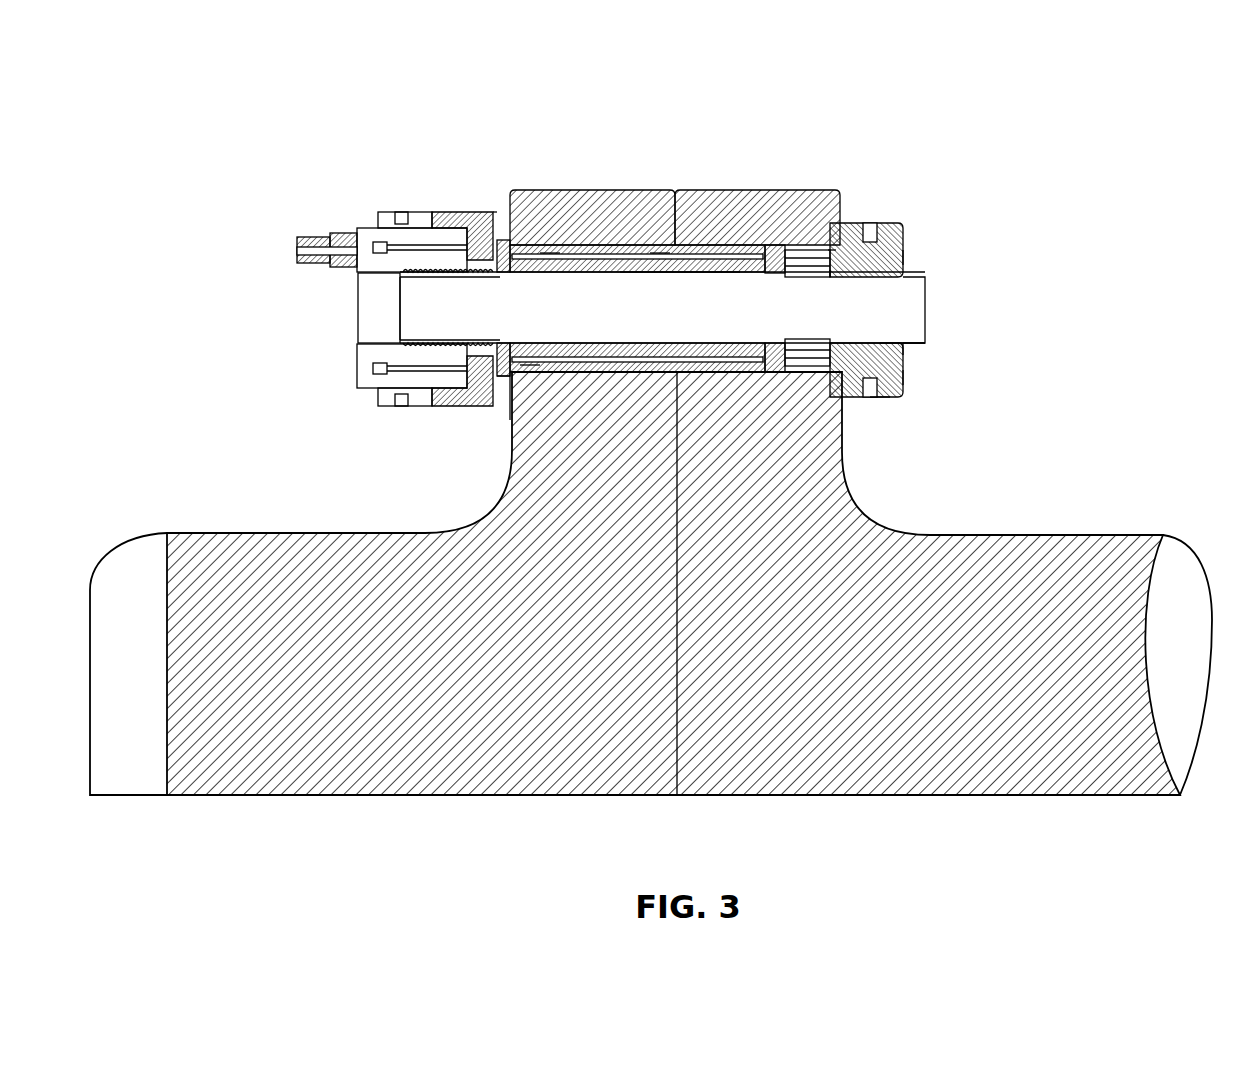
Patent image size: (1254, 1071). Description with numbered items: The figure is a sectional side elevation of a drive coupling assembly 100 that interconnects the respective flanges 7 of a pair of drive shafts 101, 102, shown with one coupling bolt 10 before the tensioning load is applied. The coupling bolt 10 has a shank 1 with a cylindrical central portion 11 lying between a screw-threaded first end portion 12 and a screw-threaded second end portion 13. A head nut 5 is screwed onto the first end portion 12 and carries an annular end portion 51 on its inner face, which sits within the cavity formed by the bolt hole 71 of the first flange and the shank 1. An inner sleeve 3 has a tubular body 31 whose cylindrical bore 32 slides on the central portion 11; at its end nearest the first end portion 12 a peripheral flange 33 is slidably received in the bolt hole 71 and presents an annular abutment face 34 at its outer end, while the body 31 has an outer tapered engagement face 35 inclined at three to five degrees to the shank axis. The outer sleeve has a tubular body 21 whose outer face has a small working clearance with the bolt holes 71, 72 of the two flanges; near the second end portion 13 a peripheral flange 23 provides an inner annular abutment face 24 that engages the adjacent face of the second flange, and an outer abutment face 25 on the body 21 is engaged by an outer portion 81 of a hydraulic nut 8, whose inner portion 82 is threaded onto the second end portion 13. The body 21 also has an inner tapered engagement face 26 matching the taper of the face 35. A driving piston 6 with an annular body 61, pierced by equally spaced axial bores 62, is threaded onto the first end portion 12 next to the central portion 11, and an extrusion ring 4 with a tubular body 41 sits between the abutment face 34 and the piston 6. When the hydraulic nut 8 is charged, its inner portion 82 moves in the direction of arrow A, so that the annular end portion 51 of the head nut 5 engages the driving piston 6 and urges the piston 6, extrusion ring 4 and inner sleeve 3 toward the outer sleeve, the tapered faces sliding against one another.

The shank 1 is at (945, 315).
The inner sleeve 3 is at (775, 255).
The extrusion ring 4 is at (800, 252).
The head nut 5 is at (910, 257).
The driving piston 6 is at (842, 222).
The flange 7 is at (598, 188).
The hydraulic nut 8 is at (418, 238).
The coupling bolt 10 is at (352, 325).
The cylindrical central portion 11 is at (662, 322).
The first end portion 12 is at (847, 322).
The second end portion 13 is at (437, 322).
The tubular body 21 is at (468, 407).
The peripheral flange 23 is at (500, 207).
The inner annular abutment face 24 is at (512, 415).
The outer abutment face 25 is at (507, 405).
The inner tapered engagement face 26 is at (556, 252).
The tubular body 31 is at (905, 350).
The cylindrical bore 32 is at (805, 373).
The peripheral flange 33 is at (757, 373).
The annular abutment face 34 is at (880, 397).
The outer tapered engagement face 35 is at (662, 252).
The tubular body 41 is at (790, 252).
The annular end portion 51 is at (905, 378).
The annular body 61 is at (832, 250).
The axial bores 62 is at (830, 276).
The bolt hole 71 is at (727, 373).
The bolt hole 72 is at (530, 367).
The outer portion 81 is at (470, 214).
The inner portion 82 is at (370, 385).
The drive coupling assembly 100 is at (258, 455).
The drive shaft 101 is at (226, 531).
The drive shaft 102 is at (1040, 532).
The arrow A is at (330, 308).